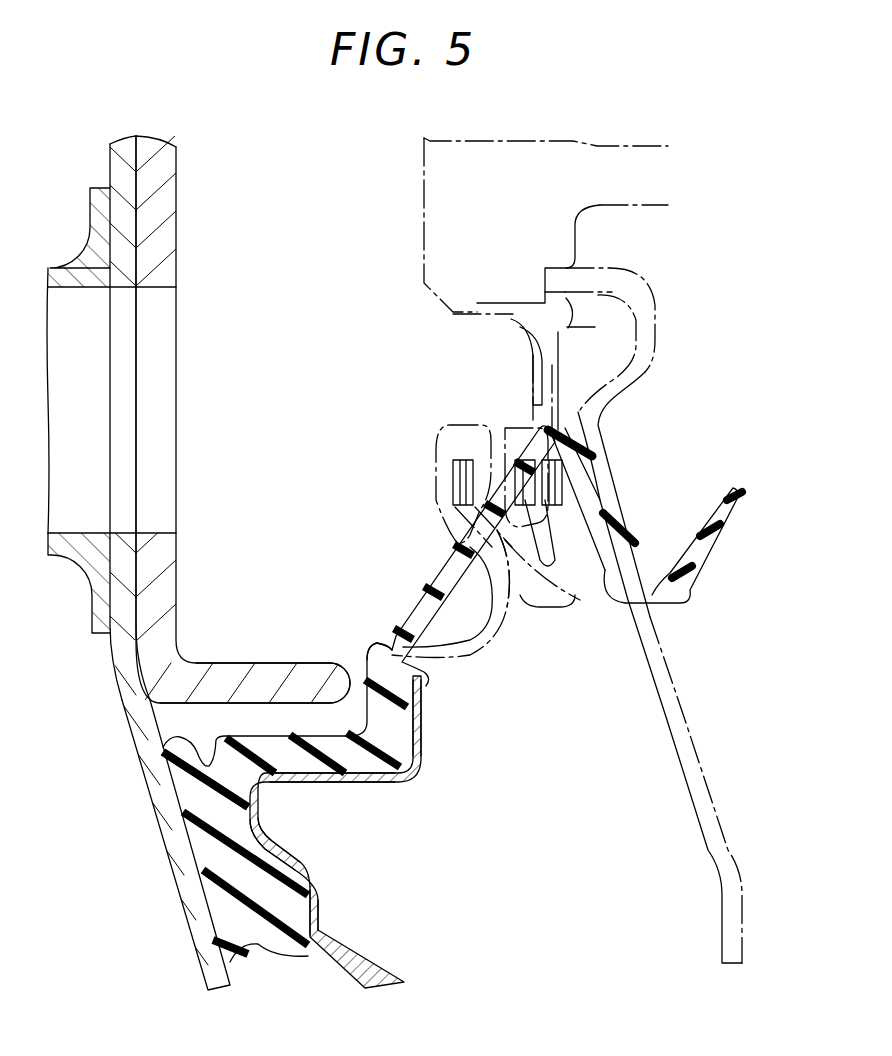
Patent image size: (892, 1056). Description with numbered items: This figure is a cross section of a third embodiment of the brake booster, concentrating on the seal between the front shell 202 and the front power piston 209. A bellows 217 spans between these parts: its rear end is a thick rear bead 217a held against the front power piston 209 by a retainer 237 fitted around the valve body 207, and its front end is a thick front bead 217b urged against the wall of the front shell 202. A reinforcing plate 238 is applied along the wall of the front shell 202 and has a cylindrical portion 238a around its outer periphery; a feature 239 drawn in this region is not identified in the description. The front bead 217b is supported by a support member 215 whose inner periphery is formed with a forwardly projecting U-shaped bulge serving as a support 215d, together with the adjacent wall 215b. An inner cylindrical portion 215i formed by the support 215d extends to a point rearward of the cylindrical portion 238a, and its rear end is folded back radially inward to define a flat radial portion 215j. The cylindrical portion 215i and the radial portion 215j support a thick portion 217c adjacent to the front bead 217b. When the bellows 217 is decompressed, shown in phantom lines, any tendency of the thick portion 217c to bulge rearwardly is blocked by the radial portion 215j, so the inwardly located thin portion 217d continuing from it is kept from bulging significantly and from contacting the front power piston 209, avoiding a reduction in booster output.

The front shell 202 is at (160, 802).
The valve body 207 is at (420, 249).
The front power piston 209 is at (683, 789).
The support member 215 is at (366, 960).
The adjacent wall 215b is at (316, 897).
The support 215d is at (253, 810).
The inner cylindrical portion 215i is at (340, 785).
The flat radial portion 215j is at (413, 727).
The bellows 217 is at (440, 562).
The rear bead 217a is at (645, 260).
The front bead 217b is at (240, 915).
The thick portion 217c is at (365, 655).
The thin portion 217d is at (490, 622).
The retainer 237 is at (511, 320).
The reinforcing plate 238 is at (181, 267).
The cylindrical portion 238a is at (238, 664).
The opening 239 is at (72, 288).